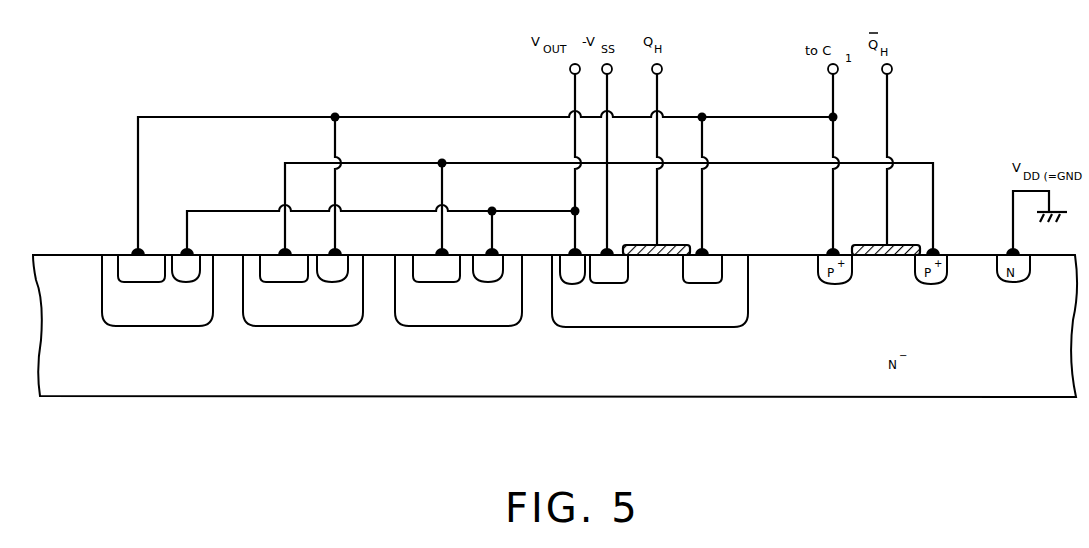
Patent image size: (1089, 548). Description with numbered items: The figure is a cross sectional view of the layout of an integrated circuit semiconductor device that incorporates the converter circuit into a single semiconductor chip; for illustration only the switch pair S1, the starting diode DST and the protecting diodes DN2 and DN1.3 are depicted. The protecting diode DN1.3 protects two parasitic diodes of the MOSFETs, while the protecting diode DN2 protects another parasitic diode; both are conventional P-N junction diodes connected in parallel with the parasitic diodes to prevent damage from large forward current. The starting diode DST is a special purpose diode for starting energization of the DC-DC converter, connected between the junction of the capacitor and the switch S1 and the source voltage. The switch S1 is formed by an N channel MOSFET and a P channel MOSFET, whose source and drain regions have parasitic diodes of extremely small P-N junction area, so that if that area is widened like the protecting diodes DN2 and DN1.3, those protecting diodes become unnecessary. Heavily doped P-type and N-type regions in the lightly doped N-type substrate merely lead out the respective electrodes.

The protecting diode DN1.3 is at (157, 307).
The starting diode DST is at (303, 307).
The protecting diode DN2 is at (458, 307).
The switch pair S1 is at (673, 293).